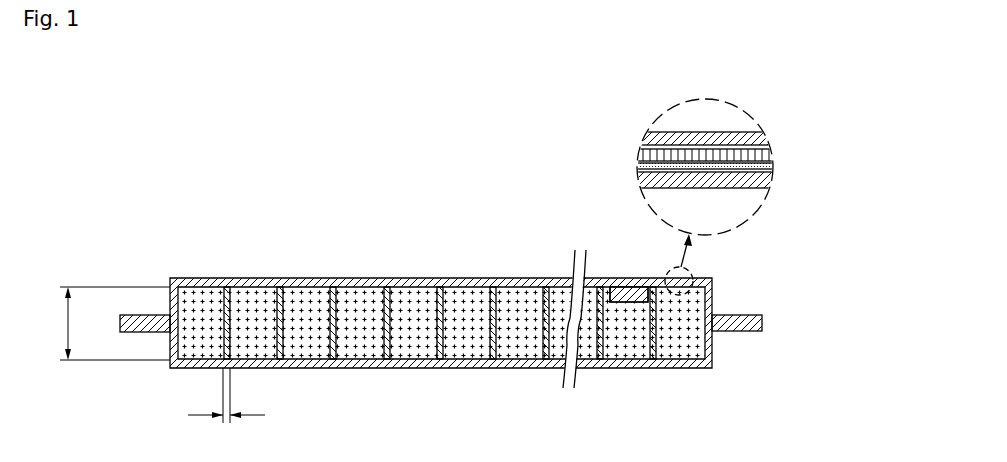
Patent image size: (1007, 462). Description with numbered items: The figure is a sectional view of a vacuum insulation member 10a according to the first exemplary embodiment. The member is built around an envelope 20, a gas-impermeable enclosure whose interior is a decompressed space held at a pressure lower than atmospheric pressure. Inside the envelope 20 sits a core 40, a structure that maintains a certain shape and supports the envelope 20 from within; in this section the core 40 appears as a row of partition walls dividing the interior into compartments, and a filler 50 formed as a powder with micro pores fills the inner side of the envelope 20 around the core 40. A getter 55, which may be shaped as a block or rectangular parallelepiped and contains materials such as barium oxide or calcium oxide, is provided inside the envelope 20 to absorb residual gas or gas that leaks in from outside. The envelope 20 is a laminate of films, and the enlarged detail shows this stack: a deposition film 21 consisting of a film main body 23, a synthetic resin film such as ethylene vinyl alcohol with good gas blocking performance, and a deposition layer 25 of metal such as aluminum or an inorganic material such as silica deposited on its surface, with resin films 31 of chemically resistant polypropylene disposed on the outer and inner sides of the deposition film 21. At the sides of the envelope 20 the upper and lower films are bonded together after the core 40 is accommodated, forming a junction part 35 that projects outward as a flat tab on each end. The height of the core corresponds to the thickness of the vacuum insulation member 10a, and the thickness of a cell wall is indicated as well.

The vacuum insulation member 10a is at (196, 158).
The envelope 20 is at (273, 270).
The deposition film 21 is at (845, 126).
The film main body 23 is at (755, 154).
The deposition layer 25 is at (764, 166).
The resin film 31 is at (717, 134).
The junction part 35 is at (738, 333).
The core 40 is at (339, 318).
The filler 50 is at (361, 338).
The getter 55 is at (626, 303).